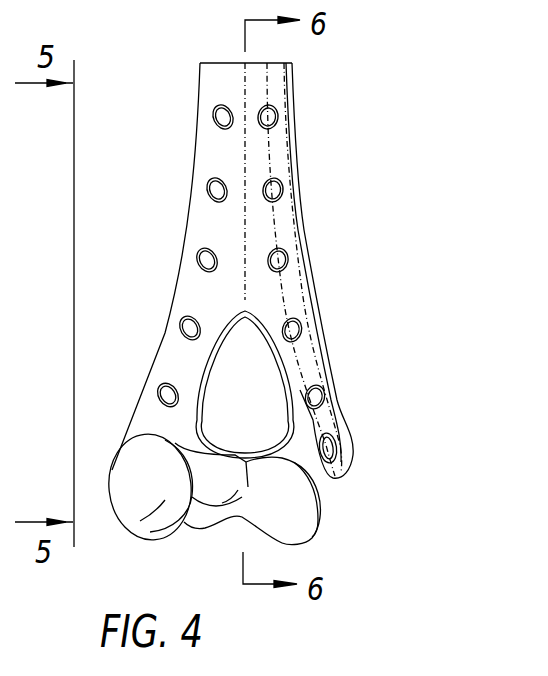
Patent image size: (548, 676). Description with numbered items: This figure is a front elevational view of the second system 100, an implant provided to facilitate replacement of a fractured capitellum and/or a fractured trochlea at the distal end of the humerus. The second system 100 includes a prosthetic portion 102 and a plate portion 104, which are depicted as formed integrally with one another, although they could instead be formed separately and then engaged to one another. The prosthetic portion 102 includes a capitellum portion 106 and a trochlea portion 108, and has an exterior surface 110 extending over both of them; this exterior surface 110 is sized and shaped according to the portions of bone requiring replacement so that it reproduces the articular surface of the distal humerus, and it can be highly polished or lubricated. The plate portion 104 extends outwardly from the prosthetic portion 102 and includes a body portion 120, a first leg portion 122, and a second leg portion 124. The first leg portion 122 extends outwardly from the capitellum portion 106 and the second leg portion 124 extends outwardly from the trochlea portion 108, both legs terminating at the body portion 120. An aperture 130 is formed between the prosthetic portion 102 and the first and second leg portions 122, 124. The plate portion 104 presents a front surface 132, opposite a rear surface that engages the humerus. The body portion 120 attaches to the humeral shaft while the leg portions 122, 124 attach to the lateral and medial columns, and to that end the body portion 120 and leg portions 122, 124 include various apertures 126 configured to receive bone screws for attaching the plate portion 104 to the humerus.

The second system 100 is at (182, 78).
The prosthetic portion 102 is at (133, 538).
The plate portion 104 is at (330, 283).
The capitellum portion 106 is at (125, 478).
The trochlea portion 108 is at (292, 517).
The exterior surface 110 is at (210, 500).
The body portion 120 is at (277, 217).
The first leg portion 122 is at (153, 417).
The second leg portion 124 is at (338, 421).
The apertures 126 is at (276, 108).
The aperture 130 is at (283, 432).
The front surface 132 is at (272, 147).